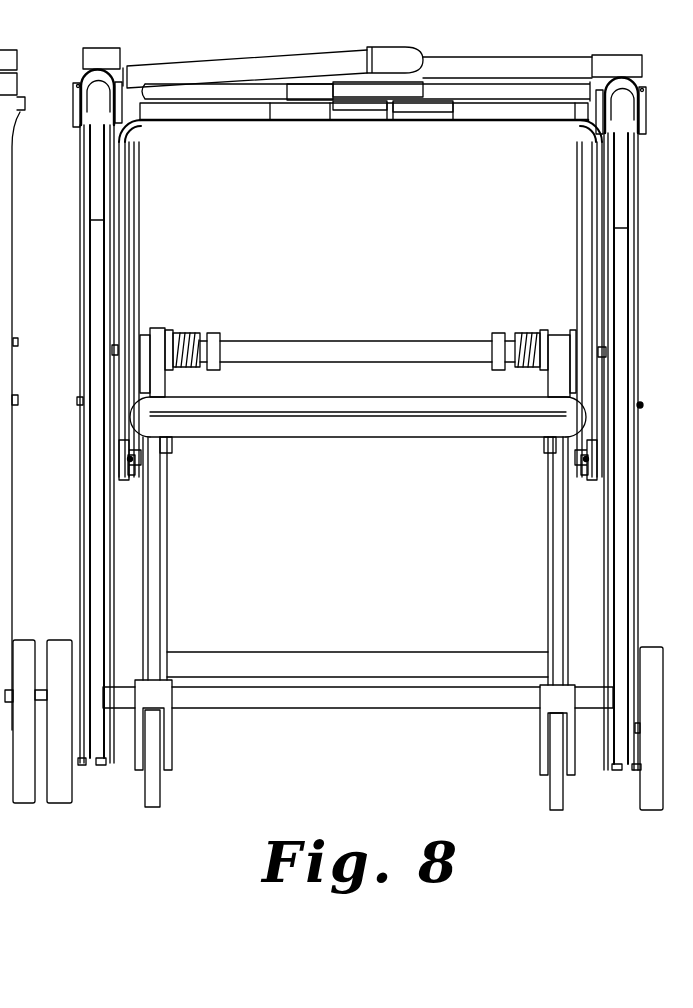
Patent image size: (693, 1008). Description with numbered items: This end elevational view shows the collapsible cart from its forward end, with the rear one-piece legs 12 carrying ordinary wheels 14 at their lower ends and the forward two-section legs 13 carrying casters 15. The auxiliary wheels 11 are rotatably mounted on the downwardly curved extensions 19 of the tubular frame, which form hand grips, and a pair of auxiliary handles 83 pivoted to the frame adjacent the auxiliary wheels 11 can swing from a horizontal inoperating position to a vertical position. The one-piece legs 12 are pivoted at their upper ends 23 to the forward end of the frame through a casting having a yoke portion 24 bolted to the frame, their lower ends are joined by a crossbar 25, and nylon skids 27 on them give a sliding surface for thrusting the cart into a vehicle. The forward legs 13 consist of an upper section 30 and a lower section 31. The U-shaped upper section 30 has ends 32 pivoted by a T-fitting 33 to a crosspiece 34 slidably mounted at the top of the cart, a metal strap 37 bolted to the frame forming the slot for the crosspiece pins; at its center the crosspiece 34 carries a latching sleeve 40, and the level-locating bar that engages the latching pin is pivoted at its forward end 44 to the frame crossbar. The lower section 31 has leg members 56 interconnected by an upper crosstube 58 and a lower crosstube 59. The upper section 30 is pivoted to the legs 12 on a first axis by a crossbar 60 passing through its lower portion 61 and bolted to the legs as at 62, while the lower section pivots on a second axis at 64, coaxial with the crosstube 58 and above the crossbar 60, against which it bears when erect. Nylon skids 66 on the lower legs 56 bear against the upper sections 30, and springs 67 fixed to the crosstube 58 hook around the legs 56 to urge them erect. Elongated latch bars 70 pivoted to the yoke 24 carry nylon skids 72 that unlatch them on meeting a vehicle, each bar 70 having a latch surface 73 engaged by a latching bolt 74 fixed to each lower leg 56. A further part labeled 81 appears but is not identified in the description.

The auxiliary wheels 11 is at (105, 213).
The rear one-piece legs 12 is at (104, 559).
The forward two-section legs 13 is at (159, 319).
The wheels 14 is at (60, 804).
The casters 15 is at (170, 781).
The downwardly curved extensions 19 is at (93, 102).
The upper ends 23 is at (73, 88).
The yoke portion 24 is at (78, 84).
The crossbar 25 is at (338, 707).
The nylon skids 27 is at (93, 593).
The upper section 30 is at (141, 257).
The lower section 31 is at (170, 495).
The ends 32 is at (144, 132).
The T-fitting 33 is at (147, 110).
The crosspiece 34 is at (315, 115).
The metal strap 37 is at (13, 152).
The latching sleeve 40 is at (400, 113).
The forward end 44 is at (357, 110).
The leg members 56 is at (168, 518).
The upper crosstube 58 is at (345, 350).
The lower crosstube 59 is at (345, 660).
The crossbar 60 is at (340, 405).
The lower portion 61 is at (347, 438).
The bolted connection 62 is at (18, 400).
The pivot axis 64 is at (113, 349).
The nylon skids 66 is at (158, 590).
The springs 67 is at (192, 333).
The latch bars 70 is at (133, 170).
The nylon skids 72 is at (126, 282).
The latch surface 73 is at (141, 475).
The latching bolt 74 is at (128, 488).
The handle end box 81 is at (127, 70).
The auxiliary handles 83 is at (400, 88).